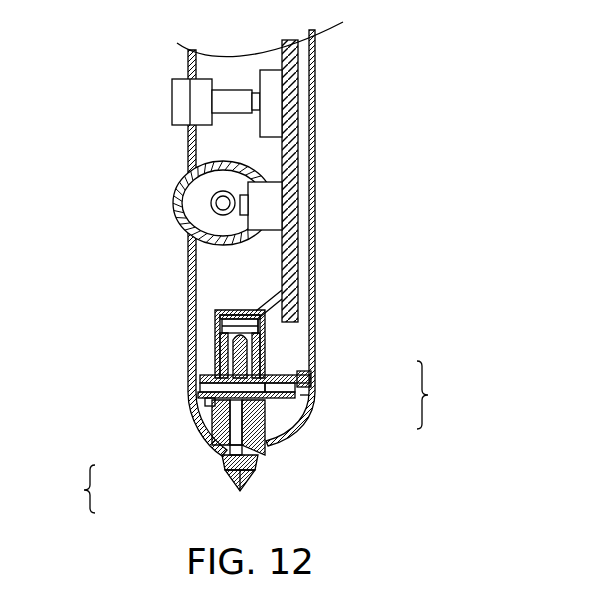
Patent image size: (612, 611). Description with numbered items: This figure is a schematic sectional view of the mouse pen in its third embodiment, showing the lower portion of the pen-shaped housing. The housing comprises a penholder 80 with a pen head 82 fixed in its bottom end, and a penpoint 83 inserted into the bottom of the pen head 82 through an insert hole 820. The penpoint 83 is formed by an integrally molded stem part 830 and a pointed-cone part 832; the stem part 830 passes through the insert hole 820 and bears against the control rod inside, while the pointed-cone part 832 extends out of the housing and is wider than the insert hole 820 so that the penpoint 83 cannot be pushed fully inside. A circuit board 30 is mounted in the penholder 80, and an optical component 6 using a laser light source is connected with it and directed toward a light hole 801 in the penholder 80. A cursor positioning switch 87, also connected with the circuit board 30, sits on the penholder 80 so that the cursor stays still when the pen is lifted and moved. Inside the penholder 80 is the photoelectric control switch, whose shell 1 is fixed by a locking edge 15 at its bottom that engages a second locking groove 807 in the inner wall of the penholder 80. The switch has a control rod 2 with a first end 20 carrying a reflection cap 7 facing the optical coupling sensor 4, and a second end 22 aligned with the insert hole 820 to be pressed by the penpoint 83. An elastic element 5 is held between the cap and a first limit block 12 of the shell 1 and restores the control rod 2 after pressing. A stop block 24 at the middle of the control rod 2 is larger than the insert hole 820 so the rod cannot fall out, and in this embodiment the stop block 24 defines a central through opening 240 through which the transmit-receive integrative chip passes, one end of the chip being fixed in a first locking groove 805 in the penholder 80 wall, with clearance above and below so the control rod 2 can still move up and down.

The shell 1 is at (265, 344).
The control rod 2 is at (434, 395).
The optical coupling sensor 4 is at (266, 317).
The elastic element 5 is at (240, 331).
The optical component 6 is at (266, 394).
The reflection cap 7 is at (238, 343).
The first limit block 12 is at (250, 319).
The locking edge 15 is at (190, 383).
The first end 20 is at (268, 367).
The second end 22 is at (305, 421).
The stop block 24 is at (305, 390).
The circuit board 30 is at (286, 200).
The penholder 80 is at (325, 263).
The pen head 82 is at (258, 452).
The penpoint 83 is at (223, 484).
The cursor positioning switch 87 is at (185, 102).
The through opening 240 is at (200, 413).
The light hole 801 is at (266, 440).
The first locking groove 805 is at (192, 390).
The second locking groove 807 is at (205, 378).
The insert hole 820 is at (258, 461).
The stem part 830 is at (222, 456).
The pointed-cone part 832 is at (236, 483).